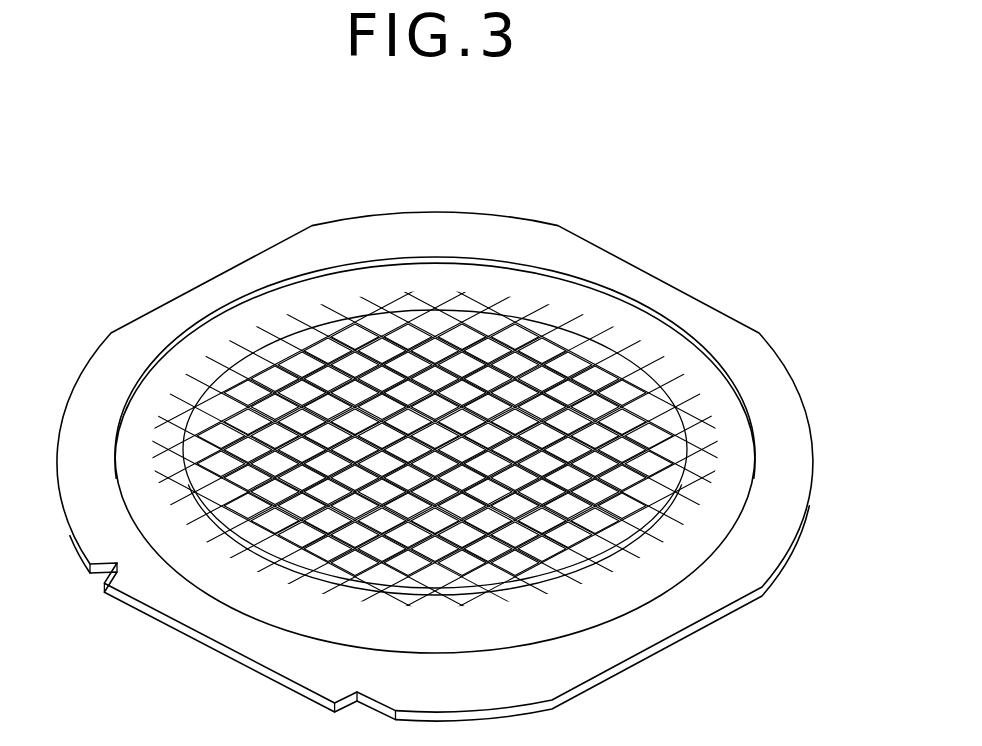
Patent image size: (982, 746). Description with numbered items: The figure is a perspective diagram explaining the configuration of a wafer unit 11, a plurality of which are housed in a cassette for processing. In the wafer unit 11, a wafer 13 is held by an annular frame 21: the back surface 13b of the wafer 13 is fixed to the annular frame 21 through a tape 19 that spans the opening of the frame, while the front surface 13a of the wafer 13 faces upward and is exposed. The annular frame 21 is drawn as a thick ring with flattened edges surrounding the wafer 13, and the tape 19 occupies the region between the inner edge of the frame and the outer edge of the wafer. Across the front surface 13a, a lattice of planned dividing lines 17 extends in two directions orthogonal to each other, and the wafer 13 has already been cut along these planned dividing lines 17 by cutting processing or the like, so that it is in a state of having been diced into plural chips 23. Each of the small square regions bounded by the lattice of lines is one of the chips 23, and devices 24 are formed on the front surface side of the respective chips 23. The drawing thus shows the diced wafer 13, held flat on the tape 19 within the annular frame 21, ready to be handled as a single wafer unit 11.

The wafer unit 11 is at (322, 188).
The wafer 13 is at (560, 300).
The front surface 13a is at (570, 340).
The back surface 13b is at (583, 578).
The planned dividing lines 17 is at (365, 327).
The tape 19 is at (278, 310).
The annular frame 21 is at (230, 287).
The chips 23 is at (464, 330).
The devices 24 is at (408, 337).